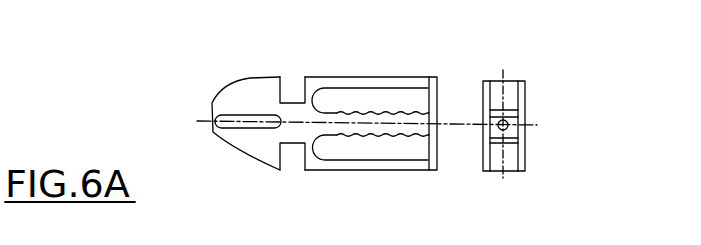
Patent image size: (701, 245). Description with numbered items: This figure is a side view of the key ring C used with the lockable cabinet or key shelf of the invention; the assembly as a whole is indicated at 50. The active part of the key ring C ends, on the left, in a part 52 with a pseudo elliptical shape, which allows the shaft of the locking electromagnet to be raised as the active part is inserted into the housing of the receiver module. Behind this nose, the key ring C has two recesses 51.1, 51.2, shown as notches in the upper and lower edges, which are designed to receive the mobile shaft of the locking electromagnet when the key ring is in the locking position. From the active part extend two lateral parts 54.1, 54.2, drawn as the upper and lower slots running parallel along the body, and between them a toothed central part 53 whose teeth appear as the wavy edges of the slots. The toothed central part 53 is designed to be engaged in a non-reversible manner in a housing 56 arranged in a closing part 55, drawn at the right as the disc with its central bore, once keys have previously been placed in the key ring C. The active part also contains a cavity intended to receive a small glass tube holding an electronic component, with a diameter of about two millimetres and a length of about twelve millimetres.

The pipette tip / assembly 50 is at (314, 120).
The recess 51.1 is at (293, 93).
The recess 51.2 is at (291, 150).
The part with a pseudo elliptical shape 52 is at (243, 148).
The toothed central part 53 is at (395, 128).
The lateral part 54.1 is at (345, 77).
The lateral part 54.2 is at (383, 171).
The closing part 55 is at (535, 108).
The housing 56 is at (519, 127).
The key ring C is at (429, 74).